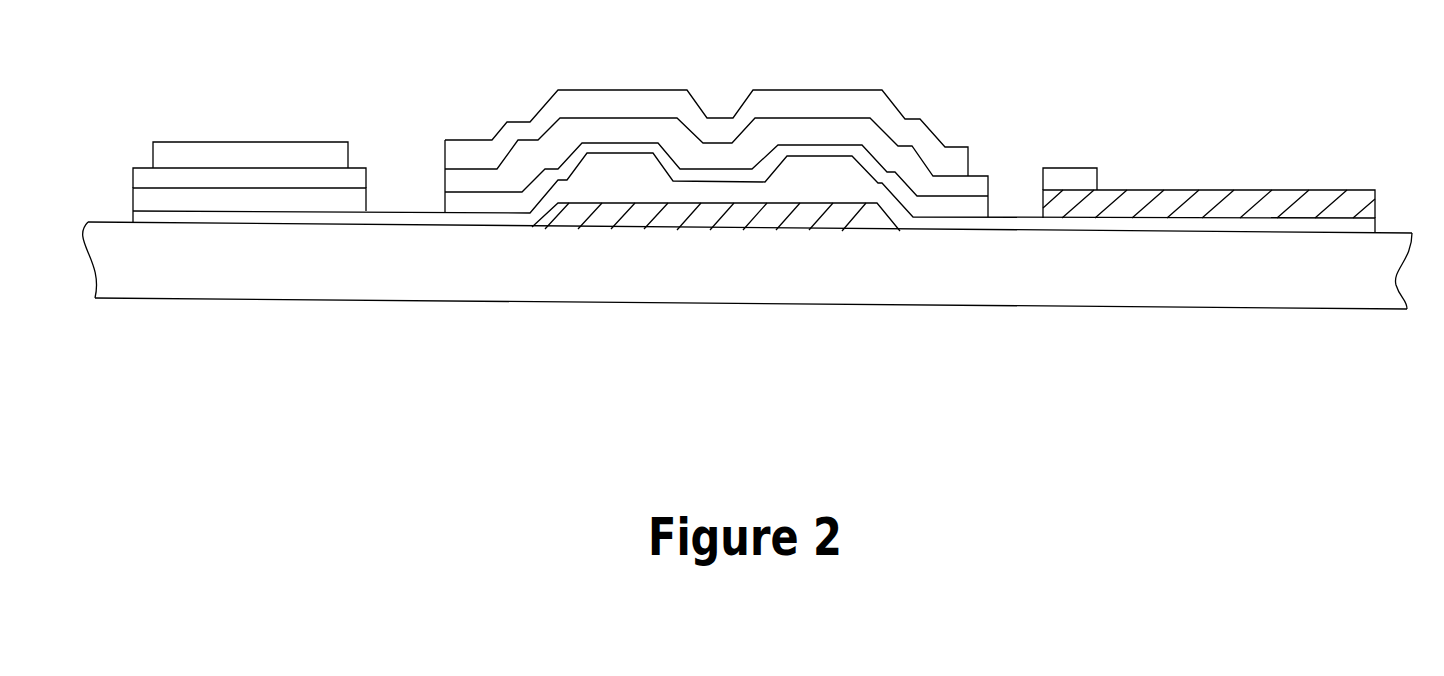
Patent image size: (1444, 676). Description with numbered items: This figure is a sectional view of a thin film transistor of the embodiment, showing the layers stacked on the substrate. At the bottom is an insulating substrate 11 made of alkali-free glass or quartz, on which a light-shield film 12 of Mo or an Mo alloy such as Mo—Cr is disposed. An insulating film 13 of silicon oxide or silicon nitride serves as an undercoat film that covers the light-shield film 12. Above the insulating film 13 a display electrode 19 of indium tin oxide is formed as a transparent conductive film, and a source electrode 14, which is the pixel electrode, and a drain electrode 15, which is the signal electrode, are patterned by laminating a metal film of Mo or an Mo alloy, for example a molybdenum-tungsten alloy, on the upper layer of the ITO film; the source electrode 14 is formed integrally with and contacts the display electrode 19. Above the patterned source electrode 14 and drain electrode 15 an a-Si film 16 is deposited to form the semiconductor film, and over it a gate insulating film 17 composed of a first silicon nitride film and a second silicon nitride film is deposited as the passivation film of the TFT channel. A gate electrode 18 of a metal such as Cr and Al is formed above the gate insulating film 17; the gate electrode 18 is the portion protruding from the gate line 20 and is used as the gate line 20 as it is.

The insulating substrate 11 is at (673, 307).
The light-shield film 12 is at (807, 232).
The insulating film 13 is at (1383, 226).
The source electrode 14 is at (795, 153).
The drain electrode 15 is at (598, 153).
The a-Si film 16 is at (132, 202).
The gate insulating film 17 is at (370, 177).
The gate electrode 18 is at (827, 91).
The display electrode 19 is at (1232, 188).
The gate line 20 is at (325, 142).